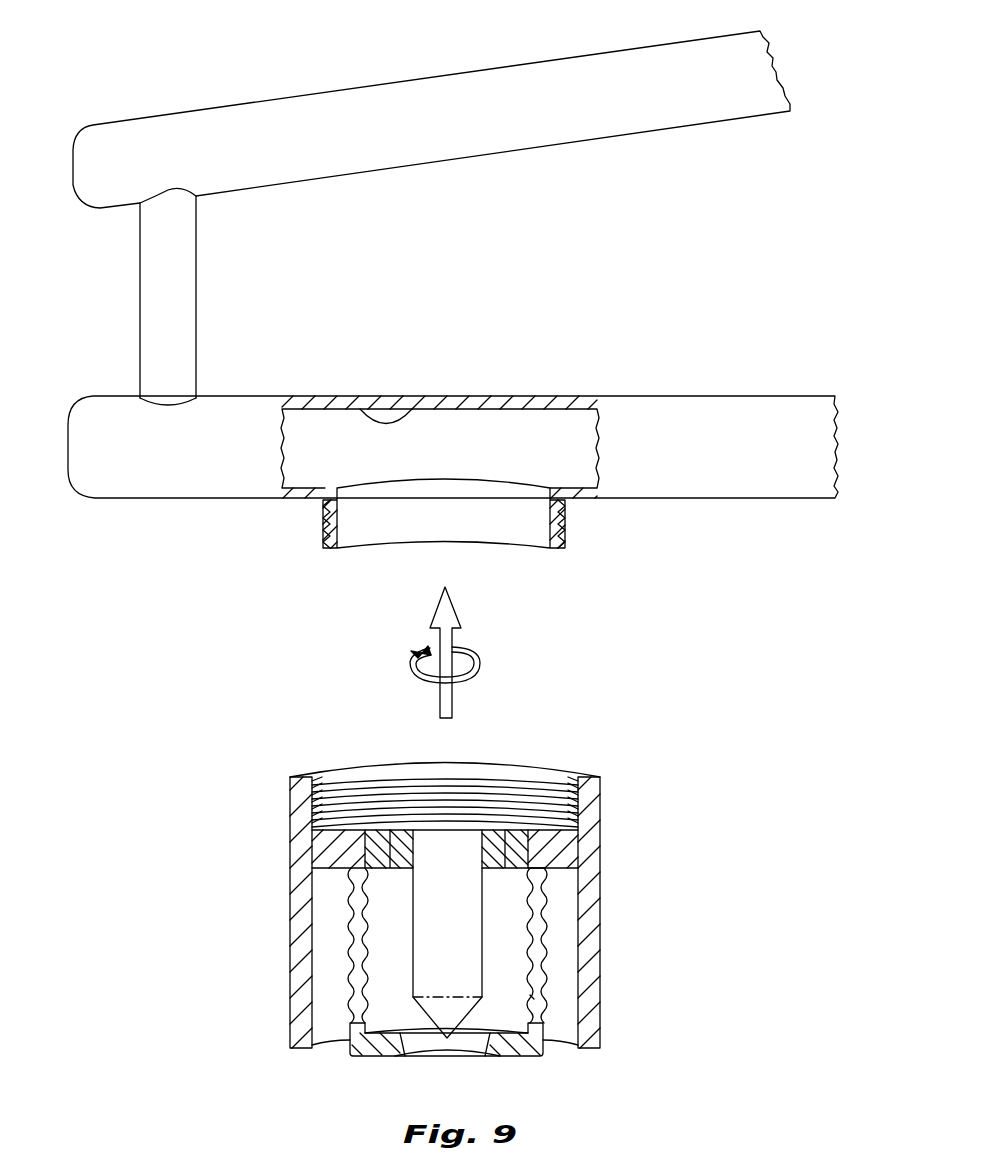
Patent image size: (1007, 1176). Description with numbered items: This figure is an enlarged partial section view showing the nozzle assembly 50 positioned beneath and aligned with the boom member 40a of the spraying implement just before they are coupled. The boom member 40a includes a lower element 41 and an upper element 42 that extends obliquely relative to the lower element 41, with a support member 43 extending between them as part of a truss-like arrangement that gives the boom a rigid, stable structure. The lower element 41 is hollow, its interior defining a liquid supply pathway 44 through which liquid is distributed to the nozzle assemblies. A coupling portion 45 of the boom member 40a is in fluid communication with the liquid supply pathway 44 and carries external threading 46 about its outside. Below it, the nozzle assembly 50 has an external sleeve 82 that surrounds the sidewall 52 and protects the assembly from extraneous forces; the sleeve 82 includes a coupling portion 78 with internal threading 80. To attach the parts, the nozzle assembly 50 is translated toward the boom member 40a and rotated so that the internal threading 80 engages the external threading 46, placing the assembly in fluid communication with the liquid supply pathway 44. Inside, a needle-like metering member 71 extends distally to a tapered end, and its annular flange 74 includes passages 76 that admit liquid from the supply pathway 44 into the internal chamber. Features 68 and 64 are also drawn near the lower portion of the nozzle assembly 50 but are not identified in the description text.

The clamp assembly 40a is at (124, 90).
The upper arm 42 is at (305, 92).
The connecting bar 43 is at (197, 290).
The lower arm 41 is at (91, 512).
The dimple 44 is at (398, 406).
The threaded stub 45 is at (578, 546).
The threads 46 is at (322, 530).
The cap assembly 50 is at (274, 808).
The top rim 78 is at (578, 769).
The internal threads 80 is at (380, 792).
The outer wall 82 is at (602, 993).
The disc 74 is at (313, 853).
The disc edge 76 is at (545, 895).
The pin 71 is at (428, 918).
The pin tip region 68 is at (533, 997).
The spring 52 is at (546, 935).
The bottom cap 64 is at (420, 1056).